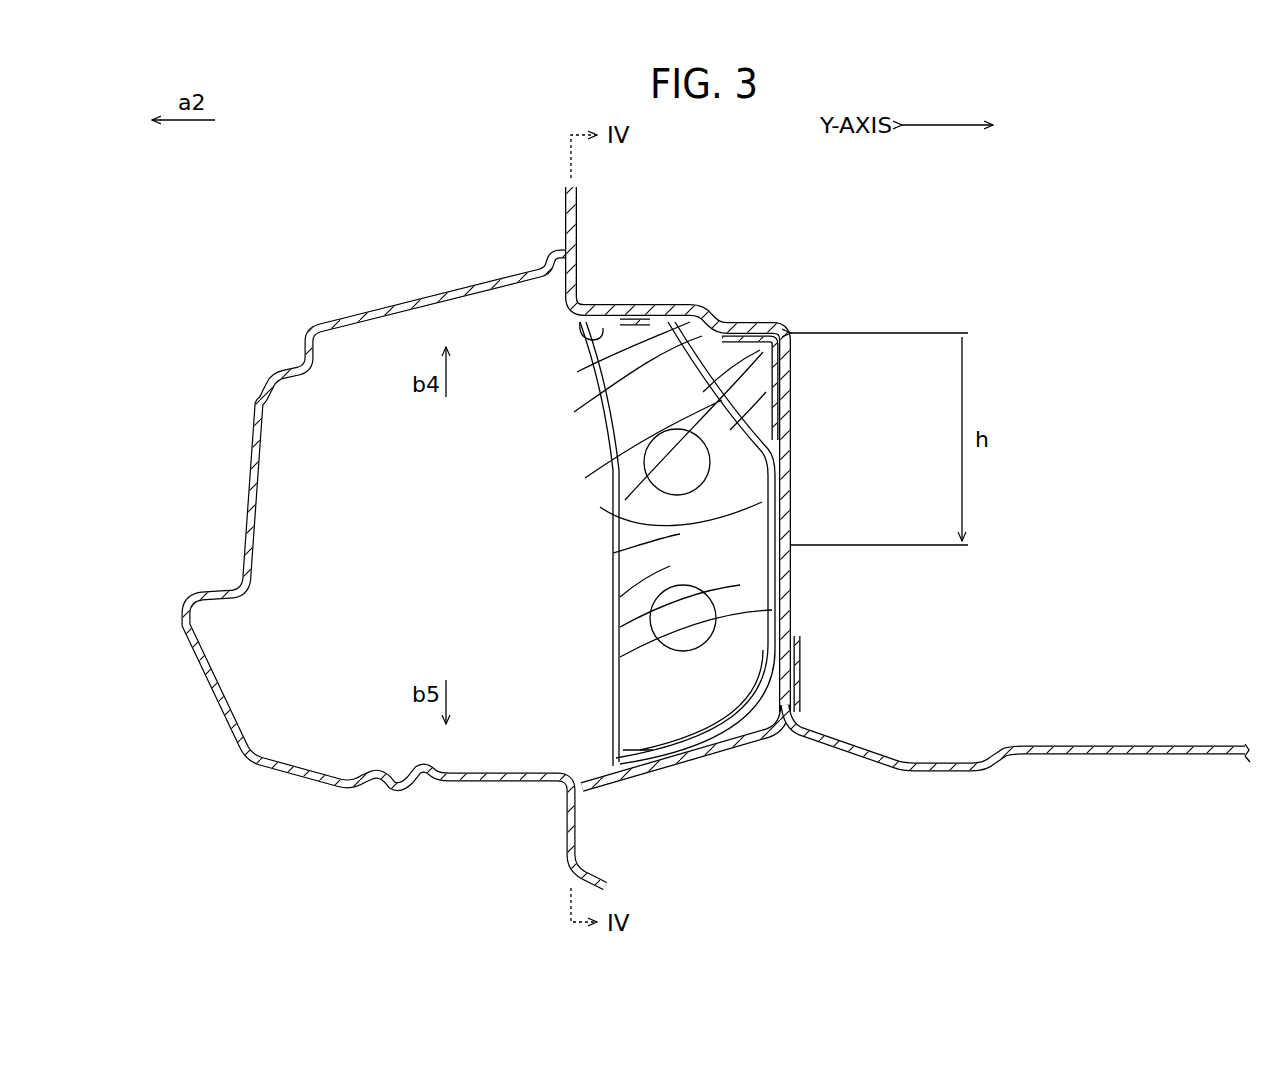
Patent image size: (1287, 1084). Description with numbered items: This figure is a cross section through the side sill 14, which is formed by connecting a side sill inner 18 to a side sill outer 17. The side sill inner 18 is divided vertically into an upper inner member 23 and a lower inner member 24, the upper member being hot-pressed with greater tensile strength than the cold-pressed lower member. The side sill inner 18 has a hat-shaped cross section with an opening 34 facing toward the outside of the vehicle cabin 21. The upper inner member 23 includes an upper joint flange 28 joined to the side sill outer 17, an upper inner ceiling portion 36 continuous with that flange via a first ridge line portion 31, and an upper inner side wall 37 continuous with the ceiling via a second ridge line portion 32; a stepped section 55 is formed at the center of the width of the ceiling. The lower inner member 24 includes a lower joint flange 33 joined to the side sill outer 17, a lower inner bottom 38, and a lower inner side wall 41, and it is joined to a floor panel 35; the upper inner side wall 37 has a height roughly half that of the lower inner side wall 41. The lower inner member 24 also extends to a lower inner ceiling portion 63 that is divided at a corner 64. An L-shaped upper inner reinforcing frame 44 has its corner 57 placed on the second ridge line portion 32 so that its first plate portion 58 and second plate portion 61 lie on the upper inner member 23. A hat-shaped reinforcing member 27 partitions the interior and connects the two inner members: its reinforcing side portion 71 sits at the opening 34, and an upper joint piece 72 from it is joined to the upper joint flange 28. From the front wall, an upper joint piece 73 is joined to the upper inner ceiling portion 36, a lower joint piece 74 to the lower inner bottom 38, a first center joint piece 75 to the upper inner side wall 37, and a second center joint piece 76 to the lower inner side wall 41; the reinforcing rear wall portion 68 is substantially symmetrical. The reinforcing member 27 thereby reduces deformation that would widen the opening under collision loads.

The side sill 14 is at (413, 216).
The side sill outer 17 is at (360, 302).
The side sill inner 18 is at (791, 372).
The vehicle cabin 21 is at (1148, 198).
The upper inner member 23 is at (608, 250).
The lower inner member 24 is at (768, 743).
The reinforcing member 27 is at (578, 462).
The upper joint flange 28 is at (580, 222).
The first ridge line portion 31 is at (597, 285).
The second ridge line portion 32 is at (762, 326).
The lower joint flange 33 is at (580, 818).
The opening 34 is at (560, 536).
The floor panel 35 is at (1110, 746).
The upper inner ceiling portion 36 is at (615, 368).
The upper inner side wall 37 is at (789, 412).
The lower inner bottom 38 is at (720, 752).
The lower inner side wall 41 is at (790, 448).
The upper inner reinforcing frame 44 is at (650, 403).
The stepped section 55 is at (640, 383).
The corner 57 is at (642, 460).
The first plate portion 58 is at (661, 430).
The second plate portion 61 is at (610, 507).
The lower inner ceiling portion 63 is at (682, 302).
The corner 64 is at (620, 305).
The reinforcing rear wall portion 68 is at (628, 600).
The reinforcing side portion 71 is at (620, 597).
The upper joint piece 72 is at (580, 322).
The upper joint piece 73 is at (600, 343).
The lower joint piece 74 is at (652, 745).
The first center joint piece 75 is at (613, 553).
The second center joint piece 76 is at (620, 657).